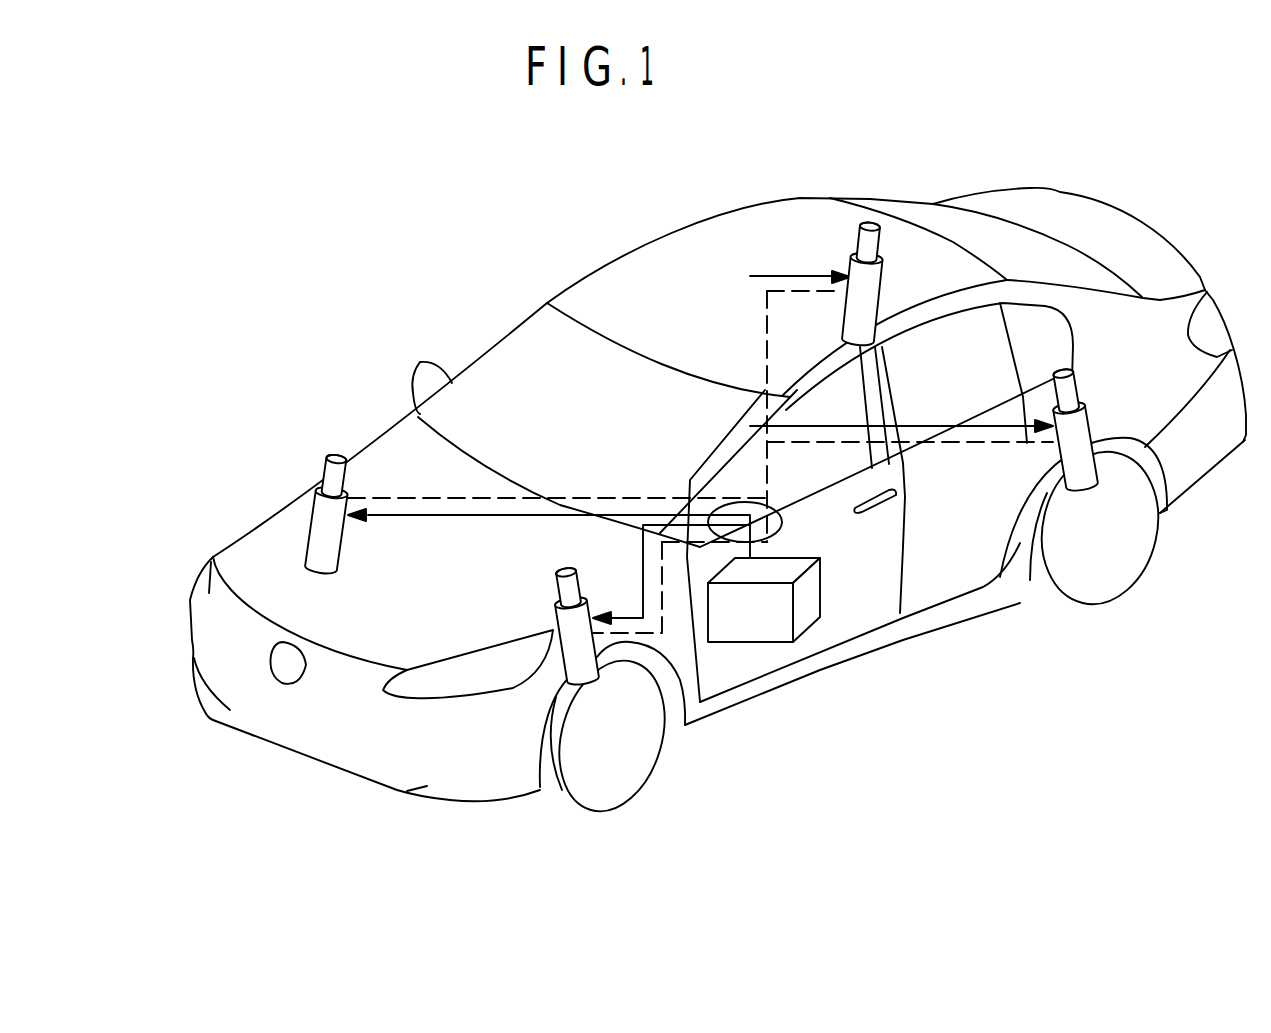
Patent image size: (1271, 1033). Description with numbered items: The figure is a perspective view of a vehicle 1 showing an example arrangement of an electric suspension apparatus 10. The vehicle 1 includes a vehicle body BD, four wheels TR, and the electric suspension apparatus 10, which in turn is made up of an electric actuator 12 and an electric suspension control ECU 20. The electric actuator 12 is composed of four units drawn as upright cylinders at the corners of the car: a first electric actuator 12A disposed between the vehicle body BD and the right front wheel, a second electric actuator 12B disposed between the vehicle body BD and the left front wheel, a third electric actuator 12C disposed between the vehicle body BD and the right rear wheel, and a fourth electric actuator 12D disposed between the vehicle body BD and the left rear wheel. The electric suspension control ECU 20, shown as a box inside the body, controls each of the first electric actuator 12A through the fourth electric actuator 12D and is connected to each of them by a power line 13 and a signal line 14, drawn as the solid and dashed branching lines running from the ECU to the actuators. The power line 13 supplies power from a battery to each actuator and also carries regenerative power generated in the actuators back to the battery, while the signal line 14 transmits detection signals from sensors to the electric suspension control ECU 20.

The vehicle 1 is at (718, 453).
The electric suspension apparatus 10 is at (658, 448).
The electric actuator 12 is at (694, 499).
The first electric actuator 12A is at (291, 530).
The second electric actuator 12B is at (546, 677).
The third electric actuator 12C is at (907, 277).
The fourth electric actuator 12D is at (1105, 412).
The power line 13 is at (827, 440).
The signal line 14 is at (957, 443).
The electric suspension control ECU 20 is at (752, 643).
The vehicle body BD is at (664, 240).
The wheel TR is at (602, 788).